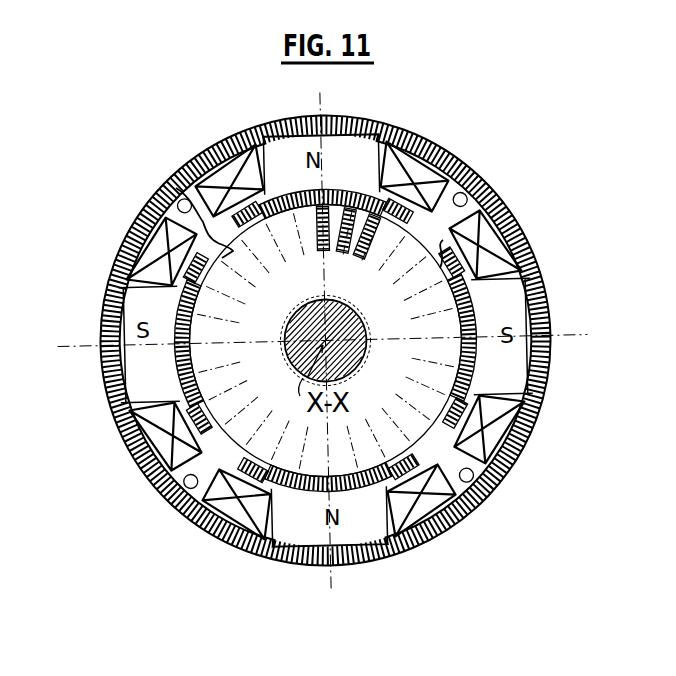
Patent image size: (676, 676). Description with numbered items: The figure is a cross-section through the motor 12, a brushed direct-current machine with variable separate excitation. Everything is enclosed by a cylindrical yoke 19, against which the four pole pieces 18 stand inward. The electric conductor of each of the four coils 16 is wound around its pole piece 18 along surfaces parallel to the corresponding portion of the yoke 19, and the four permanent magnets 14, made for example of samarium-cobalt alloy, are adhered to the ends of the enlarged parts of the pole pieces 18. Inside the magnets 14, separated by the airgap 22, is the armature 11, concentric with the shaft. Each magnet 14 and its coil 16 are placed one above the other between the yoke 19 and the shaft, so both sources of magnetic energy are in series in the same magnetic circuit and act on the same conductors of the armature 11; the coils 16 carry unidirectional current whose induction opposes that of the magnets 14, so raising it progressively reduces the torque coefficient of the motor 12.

The armature 11 is at (176, 190).
The motor 12 is at (90, 397).
The permanent magnet 14 is at (352, 205).
The coil 16 is at (226, 172).
The pole piece 18 is at (292, 155).
The yoke 19 is at (432, 151).
The airgap 22 is at (442, 240).